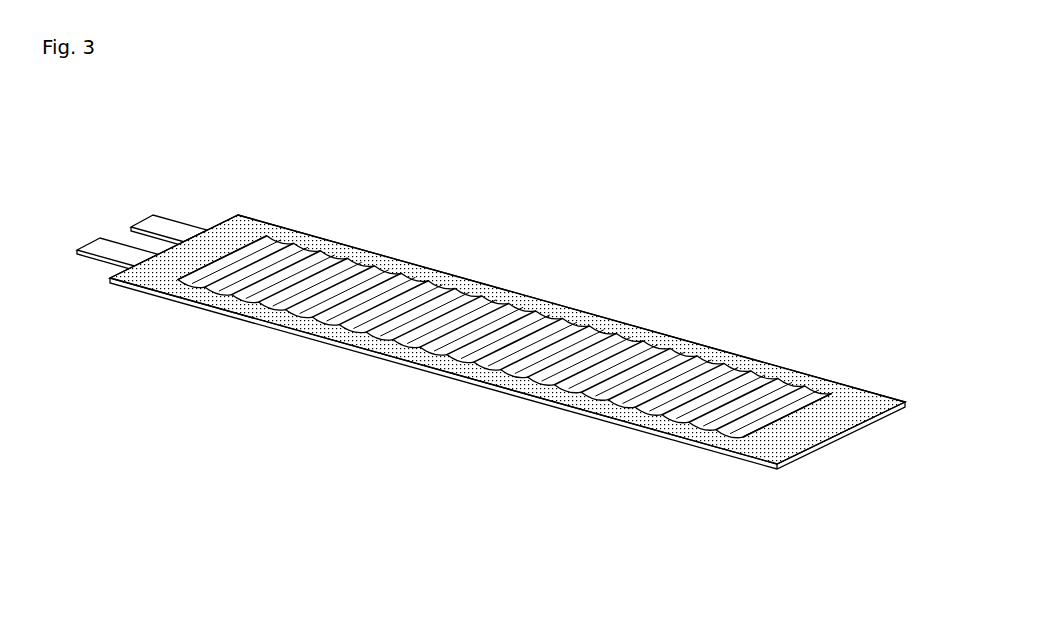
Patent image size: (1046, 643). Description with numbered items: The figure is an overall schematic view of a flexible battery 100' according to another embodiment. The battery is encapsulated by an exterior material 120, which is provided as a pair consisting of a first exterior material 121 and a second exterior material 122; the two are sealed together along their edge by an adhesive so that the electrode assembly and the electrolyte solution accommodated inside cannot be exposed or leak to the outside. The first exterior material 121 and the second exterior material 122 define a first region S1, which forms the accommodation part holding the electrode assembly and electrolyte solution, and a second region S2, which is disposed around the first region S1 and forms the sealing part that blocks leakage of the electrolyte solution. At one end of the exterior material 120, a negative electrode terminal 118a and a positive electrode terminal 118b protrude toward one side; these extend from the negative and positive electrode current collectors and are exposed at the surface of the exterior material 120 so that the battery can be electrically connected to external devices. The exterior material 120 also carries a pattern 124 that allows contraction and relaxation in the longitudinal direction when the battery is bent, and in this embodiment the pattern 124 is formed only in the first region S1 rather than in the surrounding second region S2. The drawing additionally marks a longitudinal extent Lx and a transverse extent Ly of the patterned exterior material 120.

The flexible battery 100' is at (508, 353).
The negative electrode terminal 118a is at (168, 226).
The positive electrode terminal 118b is at (102, 247).
The exterior material 120 is at (507, 394).
The first exterior material 121 is at (788, 437).
The second exterior material 122 is at (694, 447).
The pattern 124 is at (463, 322).
The first region S1 is at (676, 379).
The second region S2 is at (851, 401).
The length in x direction Lx is at (743, 437).
The length in y direction Ly is at (777, 468).